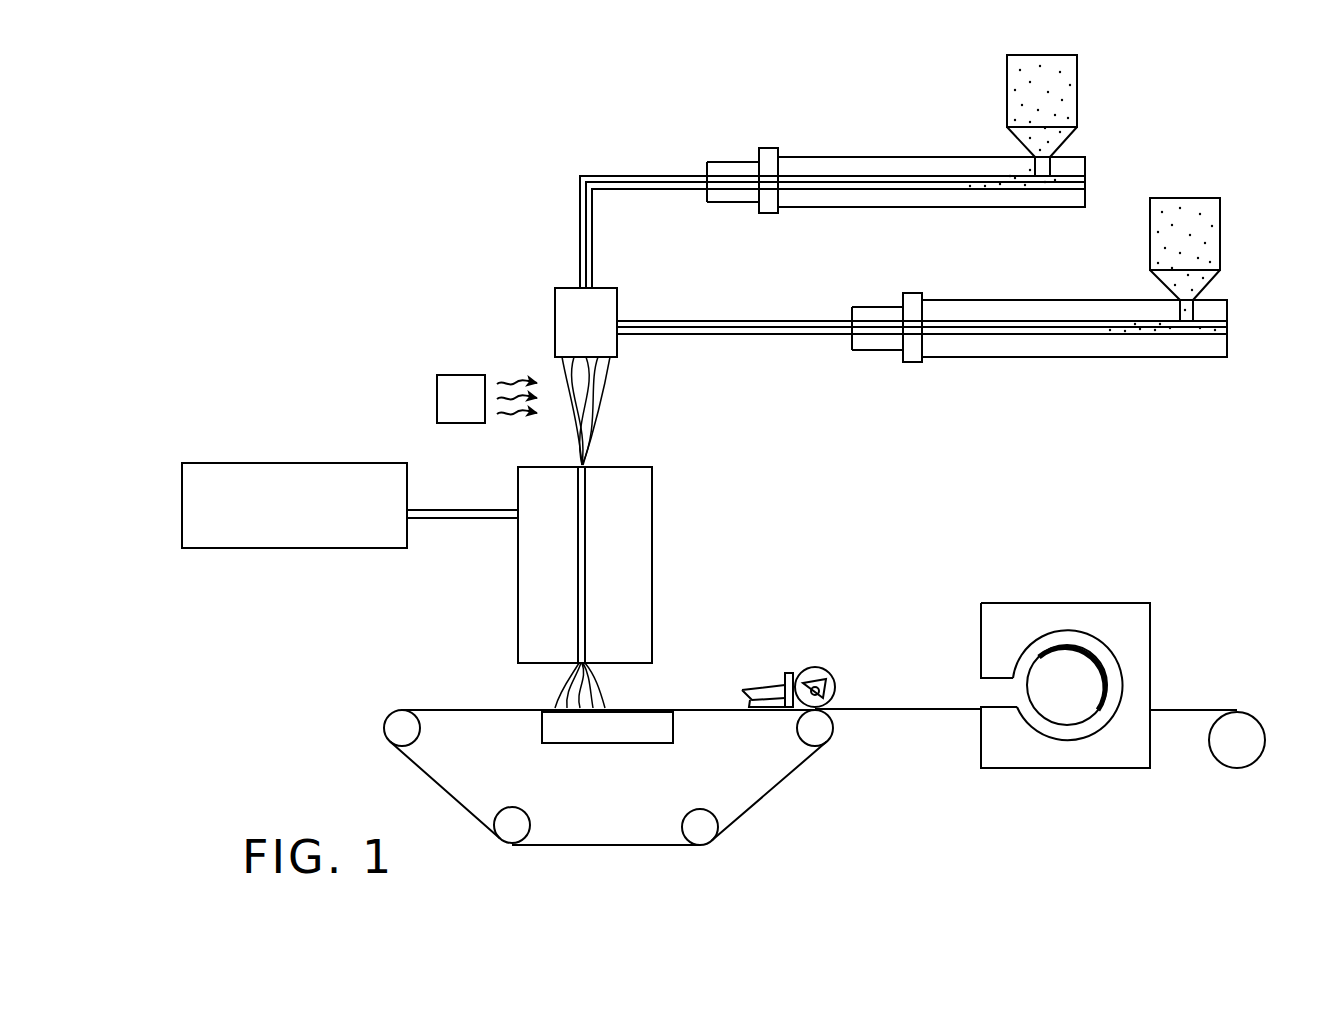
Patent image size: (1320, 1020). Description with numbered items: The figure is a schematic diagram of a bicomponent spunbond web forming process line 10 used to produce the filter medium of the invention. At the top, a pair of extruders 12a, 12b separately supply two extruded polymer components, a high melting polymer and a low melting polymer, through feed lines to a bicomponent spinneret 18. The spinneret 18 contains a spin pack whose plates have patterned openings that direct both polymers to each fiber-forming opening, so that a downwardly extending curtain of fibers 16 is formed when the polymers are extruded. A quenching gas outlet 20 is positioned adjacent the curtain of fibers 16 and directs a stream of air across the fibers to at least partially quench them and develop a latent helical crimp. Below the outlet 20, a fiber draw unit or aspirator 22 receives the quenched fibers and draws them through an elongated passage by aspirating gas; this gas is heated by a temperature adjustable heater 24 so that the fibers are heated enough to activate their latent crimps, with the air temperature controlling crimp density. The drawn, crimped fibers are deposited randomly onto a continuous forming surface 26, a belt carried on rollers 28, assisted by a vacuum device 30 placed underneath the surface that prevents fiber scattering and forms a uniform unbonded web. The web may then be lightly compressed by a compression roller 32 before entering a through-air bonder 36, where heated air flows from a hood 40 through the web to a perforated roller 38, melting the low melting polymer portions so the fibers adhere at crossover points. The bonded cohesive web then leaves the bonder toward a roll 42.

The process line 10 is at (372, 135).
The extruder 12a is at (945, 298).
The extruder 12b is at (805, 157).
The curtain of fibers 16 is at (630, 392).
The bicomponent spinneret 18 is at (572, 341).
The quenching gas outlet 20 is at (457, 384).
The fiber draw unit 22 is at (647, 463).
The temperature adjustable heater 24 is at (259, 462).
The continuous forming surface 26 is at (615, 847).
The rollers 28 is at (418, 732).
The vacuum device 30 is at (600, 745).
The compression roller 32 is at (818, 668).
The through-air bonder 36 is at (1104, 655).
The perforated roller 38 is at (1062, 722).
The hood 40 is at (1140, 632).
The winder roll 42 is at (1247, 770).